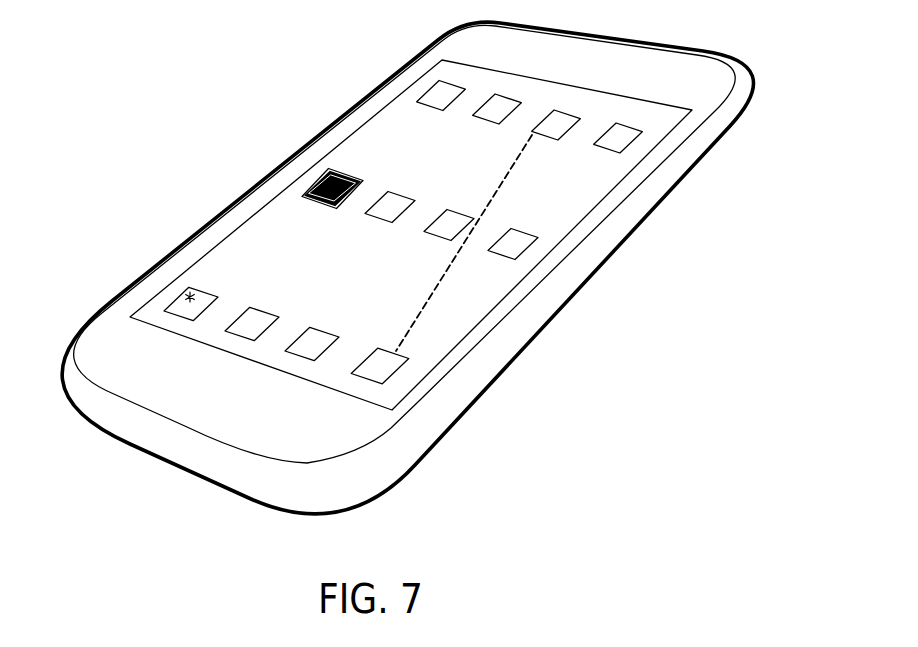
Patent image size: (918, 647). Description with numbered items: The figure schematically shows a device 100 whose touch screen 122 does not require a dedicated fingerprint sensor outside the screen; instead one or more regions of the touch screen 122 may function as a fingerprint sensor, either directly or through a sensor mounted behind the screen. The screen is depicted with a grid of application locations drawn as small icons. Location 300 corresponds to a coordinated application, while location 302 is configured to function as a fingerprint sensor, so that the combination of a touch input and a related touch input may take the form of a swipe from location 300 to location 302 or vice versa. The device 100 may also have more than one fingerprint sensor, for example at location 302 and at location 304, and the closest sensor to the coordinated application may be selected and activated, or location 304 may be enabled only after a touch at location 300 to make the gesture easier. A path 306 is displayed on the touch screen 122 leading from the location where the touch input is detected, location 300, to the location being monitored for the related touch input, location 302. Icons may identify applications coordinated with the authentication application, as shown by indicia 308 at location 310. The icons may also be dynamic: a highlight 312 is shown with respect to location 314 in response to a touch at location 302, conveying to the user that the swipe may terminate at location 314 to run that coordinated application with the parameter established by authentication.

The device 100 is at (253, 185).
The touch screen 122 is at (667, 137).
The location 300 is at (531, 129).
The location 302 is at (395, 350).
The location 304 is at (596, 146).
The path 306 is at (442, 283).
The indicia 308 is at (194, 294).
The location 310 is at (218, 297).
The highlight 312 is at (352, 176).
The location 314 is at (319, 208).